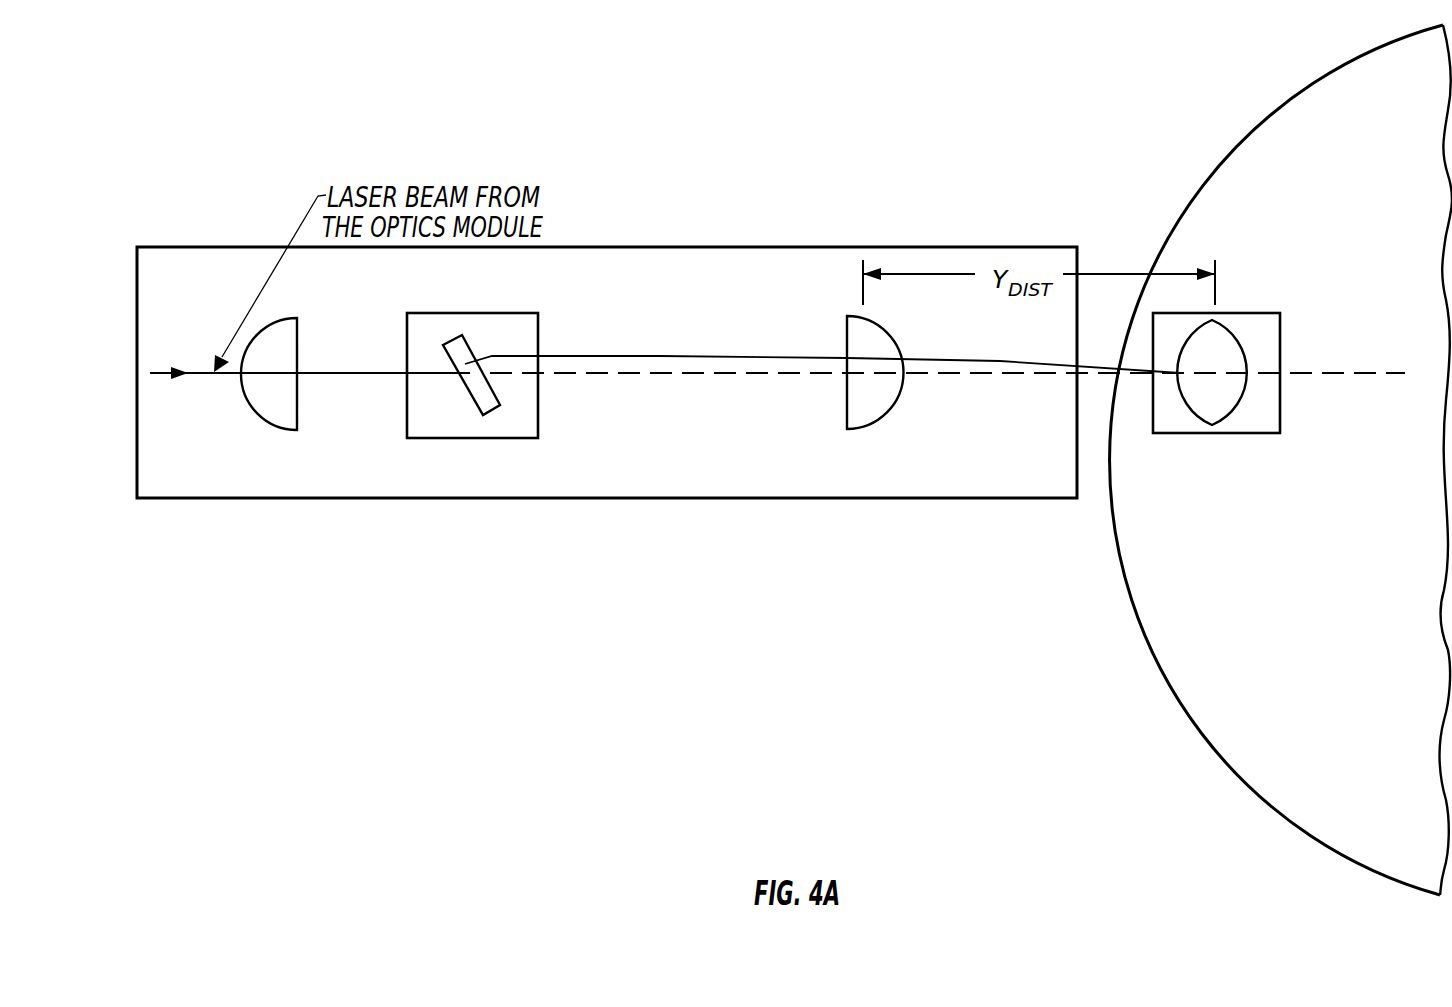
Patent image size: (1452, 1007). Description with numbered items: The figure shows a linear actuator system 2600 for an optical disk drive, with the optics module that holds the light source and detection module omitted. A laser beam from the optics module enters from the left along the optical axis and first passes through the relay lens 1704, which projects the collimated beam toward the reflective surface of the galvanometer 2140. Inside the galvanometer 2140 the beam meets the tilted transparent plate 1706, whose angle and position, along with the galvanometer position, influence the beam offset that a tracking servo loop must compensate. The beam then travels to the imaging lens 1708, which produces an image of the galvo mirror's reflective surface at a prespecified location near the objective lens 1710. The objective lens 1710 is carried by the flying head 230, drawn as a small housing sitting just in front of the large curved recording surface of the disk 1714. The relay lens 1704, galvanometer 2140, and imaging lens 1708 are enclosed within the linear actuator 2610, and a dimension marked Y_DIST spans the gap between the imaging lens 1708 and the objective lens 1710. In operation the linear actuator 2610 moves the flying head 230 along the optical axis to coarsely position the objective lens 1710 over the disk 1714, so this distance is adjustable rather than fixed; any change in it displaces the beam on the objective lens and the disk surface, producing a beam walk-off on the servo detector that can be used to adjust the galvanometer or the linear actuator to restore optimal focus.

The linear actuator system 2600 is at (503, 689).
The linear actuator 2610 is at (1003, 498).
The relay lens 1704 is at (277, 428).
The galvanometer 2140 is at (452, 440).
The transparent plate 1706 is at (490, 412).
The imaging lens 1708 is at (872, 423).
The flying head 230 is at (1178, 433).
The objective lens 1710 is at (1233, 333).
The disk 1714 is at (1193, 193).